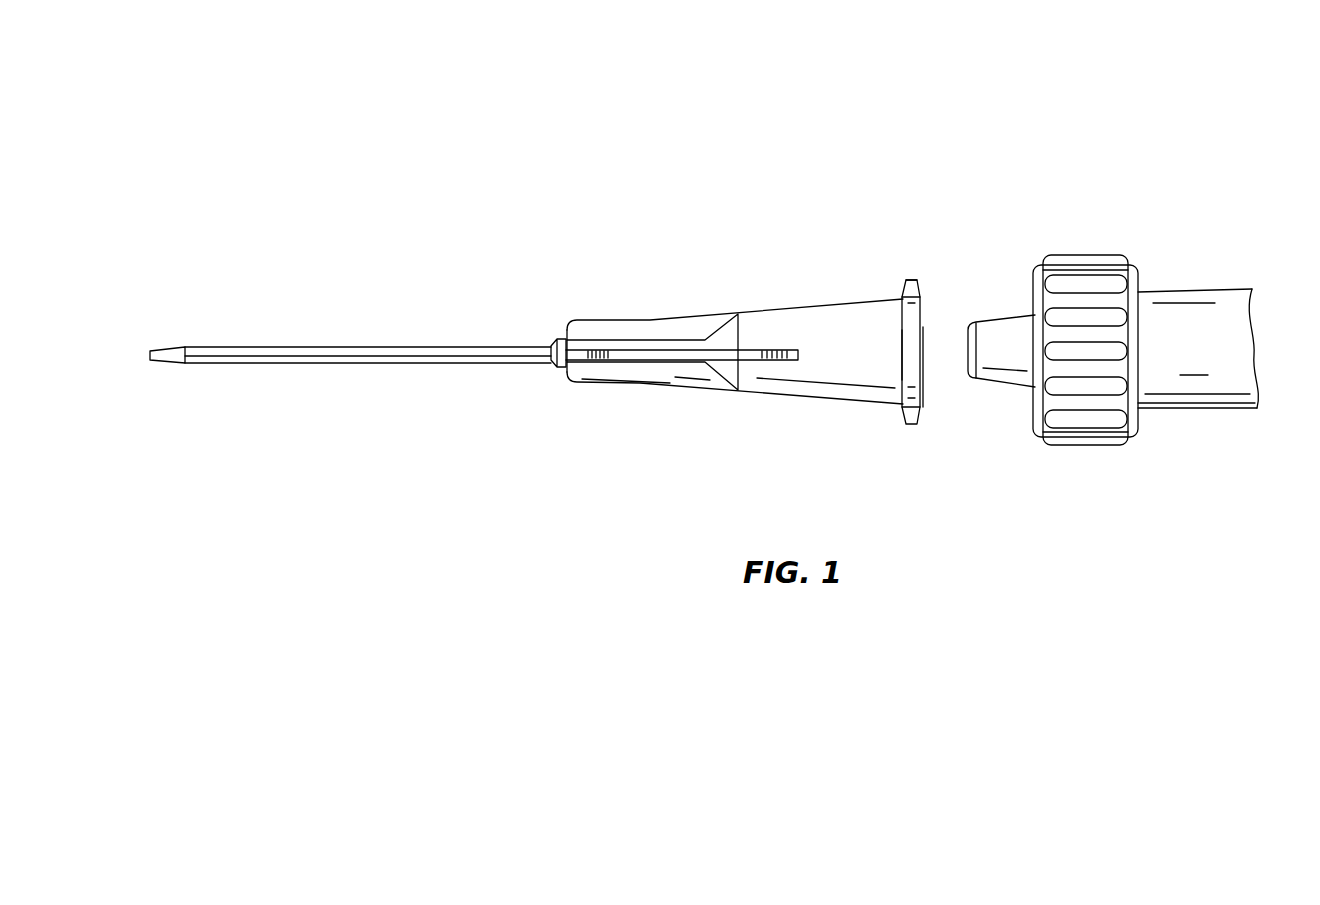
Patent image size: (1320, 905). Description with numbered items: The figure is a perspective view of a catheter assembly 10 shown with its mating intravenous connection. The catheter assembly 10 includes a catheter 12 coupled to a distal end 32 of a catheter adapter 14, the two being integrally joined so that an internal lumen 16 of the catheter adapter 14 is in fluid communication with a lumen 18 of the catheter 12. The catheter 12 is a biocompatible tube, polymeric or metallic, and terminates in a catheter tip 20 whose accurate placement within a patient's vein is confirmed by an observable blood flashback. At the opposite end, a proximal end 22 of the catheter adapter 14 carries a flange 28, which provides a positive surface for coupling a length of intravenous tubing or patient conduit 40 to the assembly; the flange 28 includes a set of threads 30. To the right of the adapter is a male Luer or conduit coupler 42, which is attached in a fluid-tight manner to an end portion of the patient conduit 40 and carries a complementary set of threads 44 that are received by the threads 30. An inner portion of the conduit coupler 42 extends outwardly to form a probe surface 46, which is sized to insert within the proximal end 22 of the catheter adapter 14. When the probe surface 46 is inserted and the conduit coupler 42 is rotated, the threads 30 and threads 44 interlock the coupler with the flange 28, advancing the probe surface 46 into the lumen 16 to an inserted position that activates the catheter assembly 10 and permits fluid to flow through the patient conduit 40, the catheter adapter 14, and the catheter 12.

The catheter assembly 10 is at (842, 104).
The catheter 12 is at (400, 350).
The catheter adapter 14 is at (805, 317).
The internal lumen 16 is at (927, 282).
The lumen 18 is at (153, 342).
The catheter tip 20 is at (205, 364).
The proximal end 22 is at (980, 220).
The flange 28 is at (901, 352).
The threads 30 is at (908, 277).
The distal end 32 is at (573, 383).
The intravenous tubing 40 is at (1188, 298).
The conduit coupler 42 is at (1086, 258).
The threads 44 is at (1027, 420).
The probe surface 46 is at (995, 376).